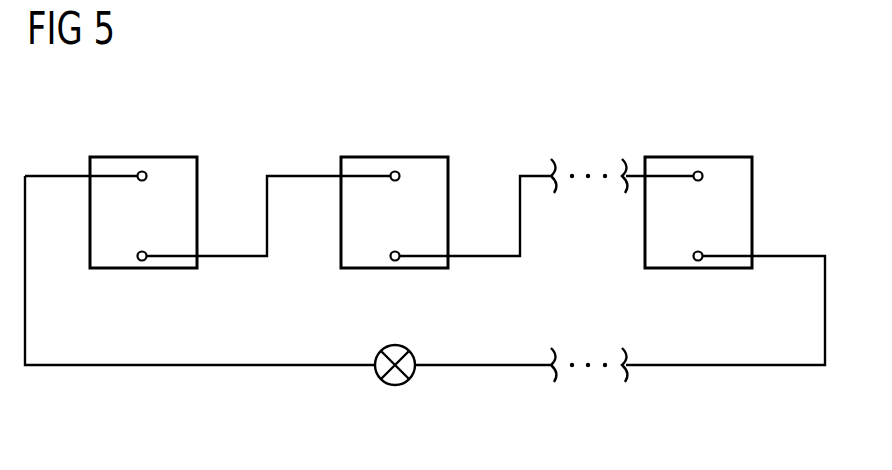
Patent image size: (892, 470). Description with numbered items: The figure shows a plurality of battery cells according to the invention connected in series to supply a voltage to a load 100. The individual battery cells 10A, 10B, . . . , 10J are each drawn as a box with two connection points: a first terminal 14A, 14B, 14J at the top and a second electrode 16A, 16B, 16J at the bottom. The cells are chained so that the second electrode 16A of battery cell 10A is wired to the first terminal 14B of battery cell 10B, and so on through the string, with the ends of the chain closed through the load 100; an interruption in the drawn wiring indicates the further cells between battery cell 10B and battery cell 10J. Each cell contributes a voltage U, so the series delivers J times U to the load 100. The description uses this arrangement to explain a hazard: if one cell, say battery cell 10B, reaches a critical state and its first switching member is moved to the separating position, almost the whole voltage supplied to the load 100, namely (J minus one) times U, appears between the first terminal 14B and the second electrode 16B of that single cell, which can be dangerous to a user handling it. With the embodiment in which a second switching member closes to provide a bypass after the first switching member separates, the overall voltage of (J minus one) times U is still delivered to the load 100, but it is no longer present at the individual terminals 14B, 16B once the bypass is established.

The battery cell 10A is at (180, 157).
The battery cell 10B is at (433, 157).
The battery cell 10J is at (737, 157).
The first terminal 14A is at (138, 171).
The first terminal 14B is at (391, 171).
The first terminal 14J is at (694, 171).
The second electrode 16A is at (141, 261).
The second electrode 16B is at (394, 261).
The second electrode 16J is at (697, 261).
The load 100 is at (395, 385).